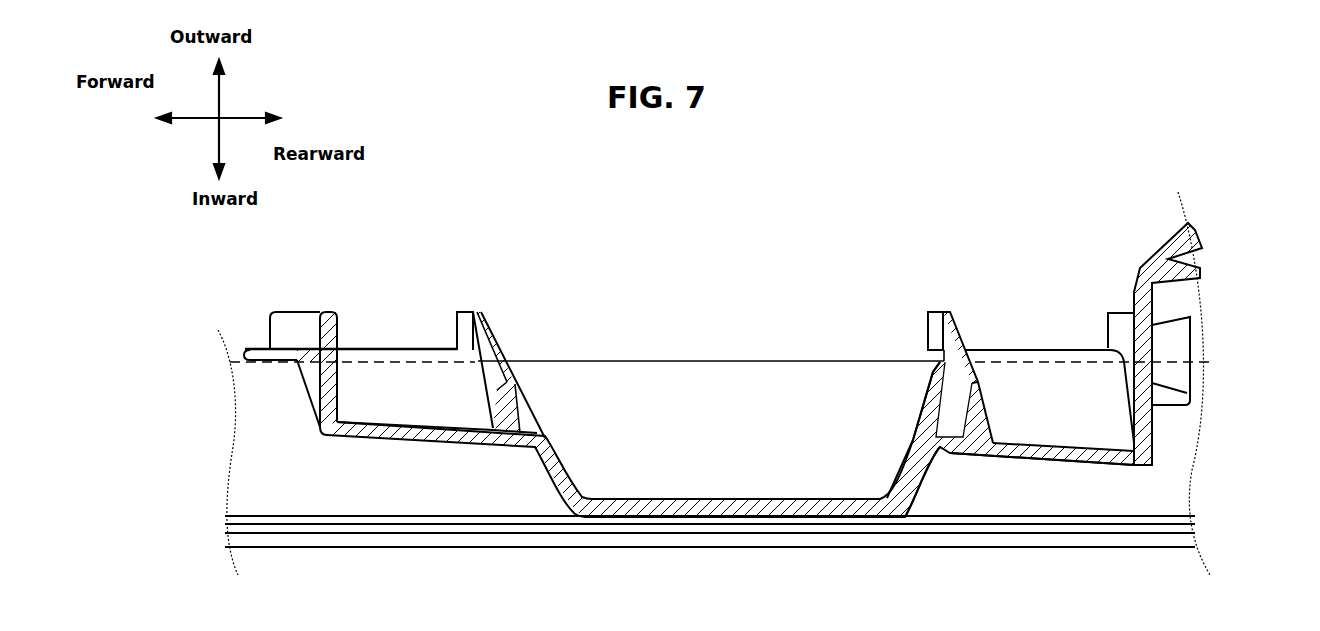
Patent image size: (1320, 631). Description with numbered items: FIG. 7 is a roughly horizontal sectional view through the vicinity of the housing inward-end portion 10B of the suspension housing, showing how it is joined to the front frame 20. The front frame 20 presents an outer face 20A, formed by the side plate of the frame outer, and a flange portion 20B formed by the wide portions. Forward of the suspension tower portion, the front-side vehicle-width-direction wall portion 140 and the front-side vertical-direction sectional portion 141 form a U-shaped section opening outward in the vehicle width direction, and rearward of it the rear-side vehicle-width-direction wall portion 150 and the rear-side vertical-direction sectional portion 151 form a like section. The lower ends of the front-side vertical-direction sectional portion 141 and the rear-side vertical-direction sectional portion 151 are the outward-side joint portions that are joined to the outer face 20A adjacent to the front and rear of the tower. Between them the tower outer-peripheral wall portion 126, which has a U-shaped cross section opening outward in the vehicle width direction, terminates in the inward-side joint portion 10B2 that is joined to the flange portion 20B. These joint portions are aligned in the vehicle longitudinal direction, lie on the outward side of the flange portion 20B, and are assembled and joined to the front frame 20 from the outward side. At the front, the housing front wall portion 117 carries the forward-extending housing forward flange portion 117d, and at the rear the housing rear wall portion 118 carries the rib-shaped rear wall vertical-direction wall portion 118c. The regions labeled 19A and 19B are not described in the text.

The housing inward-end portion 10B is at (707, 320).
The inward-side joint portion 10B2 is at (693, 507).
The front frame 20 is at (250, 453).
The outer face 20A is at (597, 362).
The flange portion 20B is at (223, 525).
The housing front wall portion 117 is at (310, 378).
The housing forward flange portion 117d is at (247, 348).
The housing rear wall portion 118 is at (1152, 427).
The rear wall vertical-direction wall portion 118c is at (1190, 338).
The tower outer-peripheral wall portion 126 is at (868, 502).
The front-side vehicle-width-direction wall portion 140 is at (487, 320).
The front-side vertical-direction sectional portion 141 is at (401, 326).
The rear-side vehicle-width-direction wall portion 150 is at (927, 345).
The rear-side vertical-direction sectional portion 151 is at (1038, 328).
The front floor portion 19A is at (413, 443).
The rear floor portion 19B is at (1080, 460).